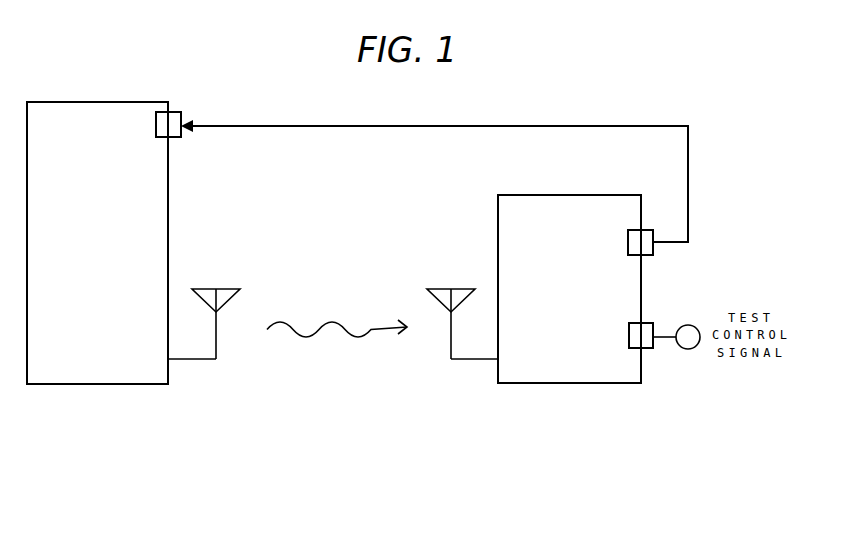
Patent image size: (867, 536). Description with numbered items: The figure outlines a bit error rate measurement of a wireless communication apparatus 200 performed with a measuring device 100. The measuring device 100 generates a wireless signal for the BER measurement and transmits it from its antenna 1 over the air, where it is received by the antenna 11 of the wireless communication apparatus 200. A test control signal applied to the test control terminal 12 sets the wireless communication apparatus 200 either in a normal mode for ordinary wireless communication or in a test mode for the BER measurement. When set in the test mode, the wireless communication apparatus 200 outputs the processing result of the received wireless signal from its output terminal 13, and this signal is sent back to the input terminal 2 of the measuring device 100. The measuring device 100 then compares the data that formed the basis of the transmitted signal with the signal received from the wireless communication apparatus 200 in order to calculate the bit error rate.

The measuring device 100 is at (116, 411).
The wireless communication apparatus 200 is at (565, 411).
The antenna 1 is at (223, 289).
The antenna 11 is at (445, 289).
The input terminal 2 is at (174, 112).
The test control terminal 12 is at (645, 349).
The output terminal 13 is at (645, 256).